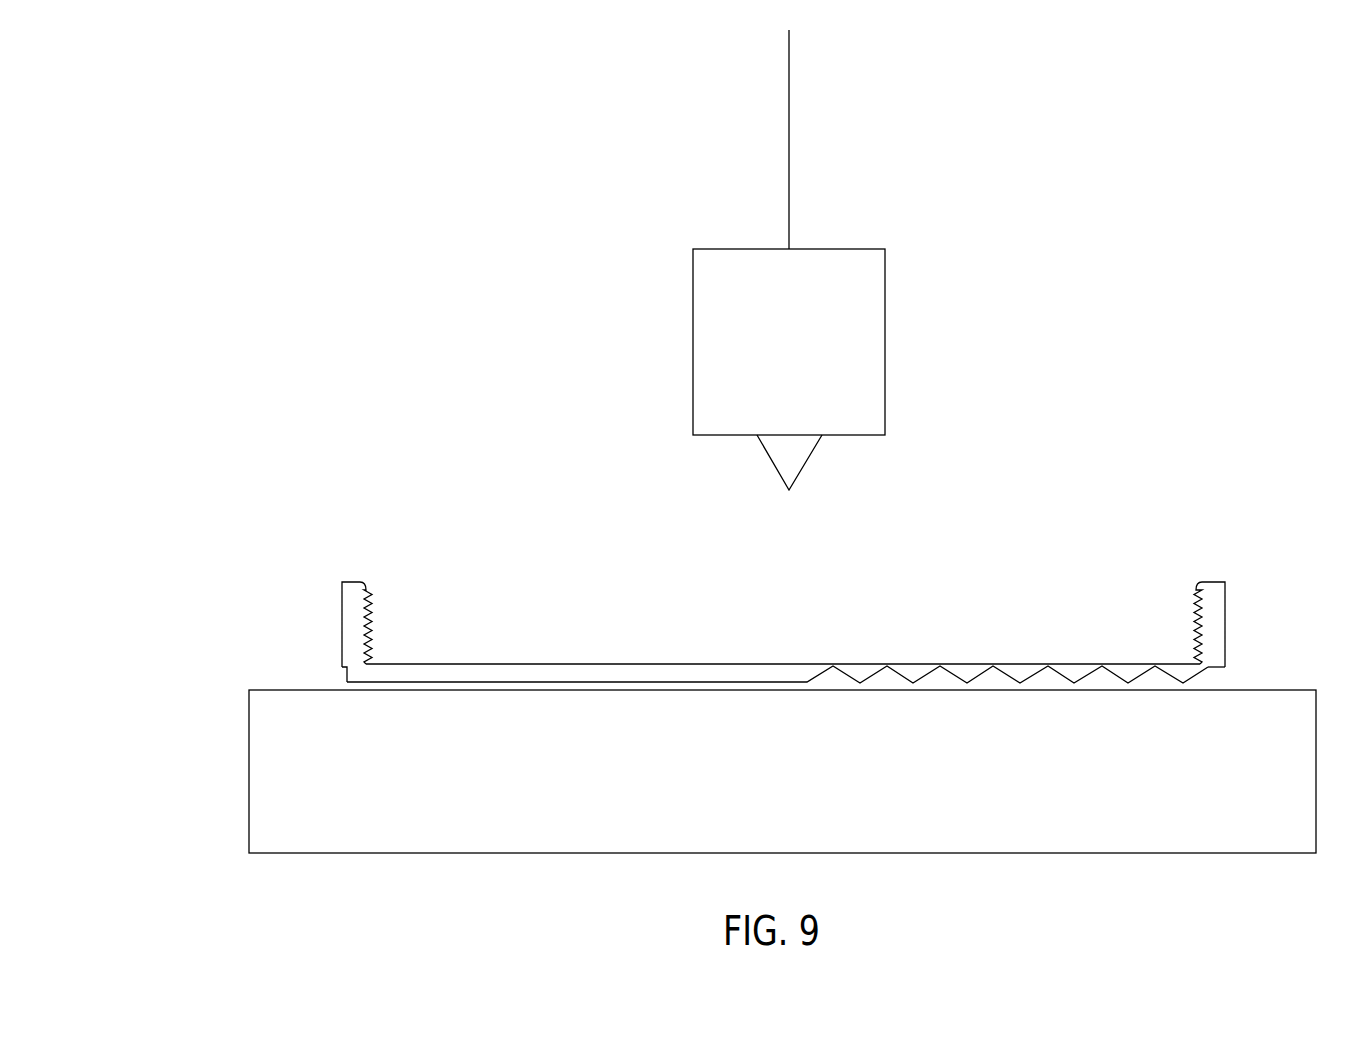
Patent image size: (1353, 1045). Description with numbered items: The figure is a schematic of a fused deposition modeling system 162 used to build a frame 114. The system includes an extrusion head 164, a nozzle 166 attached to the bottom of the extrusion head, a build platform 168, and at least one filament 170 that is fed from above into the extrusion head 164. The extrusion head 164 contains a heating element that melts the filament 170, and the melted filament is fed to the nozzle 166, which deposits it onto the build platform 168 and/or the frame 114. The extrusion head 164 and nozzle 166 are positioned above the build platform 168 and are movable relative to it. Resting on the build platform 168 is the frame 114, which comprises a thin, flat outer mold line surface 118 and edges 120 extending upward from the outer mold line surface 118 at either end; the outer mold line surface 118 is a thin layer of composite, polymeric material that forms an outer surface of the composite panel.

The fused deposition modeling system 162 is at (466, 222).
The filament 170 is at (789, 134).
The extrusion head 164 is at (693, 313).
The nozzle 166 is at (770, 458).
The frame 114 is at (350, 614).
The edge 120 is at (347, 644).
The outer mold line surface 118 is at (639, 672).
The build platform 168 is at (249, 771).